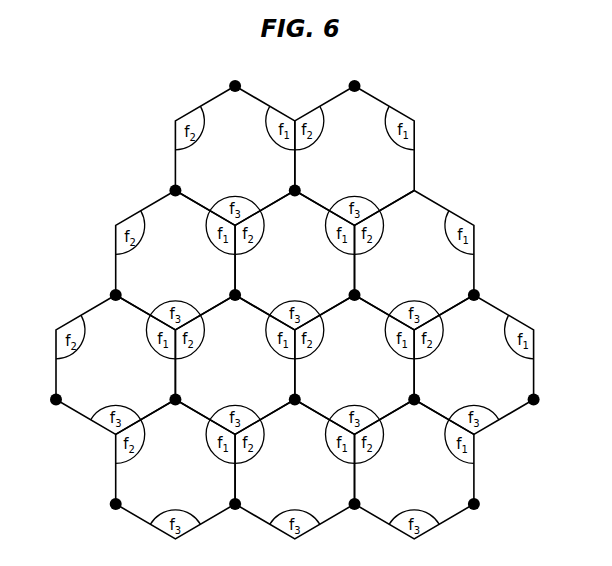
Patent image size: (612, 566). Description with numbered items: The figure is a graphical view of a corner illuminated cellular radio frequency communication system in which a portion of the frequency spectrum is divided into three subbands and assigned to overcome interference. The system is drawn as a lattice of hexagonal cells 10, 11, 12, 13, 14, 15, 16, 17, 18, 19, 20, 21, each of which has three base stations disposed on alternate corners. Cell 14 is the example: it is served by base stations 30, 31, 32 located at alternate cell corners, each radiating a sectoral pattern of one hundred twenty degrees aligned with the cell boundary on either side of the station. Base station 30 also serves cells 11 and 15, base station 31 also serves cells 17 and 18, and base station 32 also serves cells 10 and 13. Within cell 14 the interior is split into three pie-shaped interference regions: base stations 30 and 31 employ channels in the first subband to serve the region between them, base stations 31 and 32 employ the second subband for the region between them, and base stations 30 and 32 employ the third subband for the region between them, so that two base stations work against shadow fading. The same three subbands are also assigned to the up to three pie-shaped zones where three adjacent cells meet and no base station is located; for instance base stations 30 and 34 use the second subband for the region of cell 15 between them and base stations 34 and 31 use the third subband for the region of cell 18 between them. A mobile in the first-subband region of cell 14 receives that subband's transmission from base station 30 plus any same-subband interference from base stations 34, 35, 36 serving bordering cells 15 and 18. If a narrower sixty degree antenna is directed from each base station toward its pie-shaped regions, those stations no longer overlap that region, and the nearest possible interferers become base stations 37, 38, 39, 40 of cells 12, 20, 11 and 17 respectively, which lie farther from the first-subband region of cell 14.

The hexagonal cell 10 is at (185, 498).
The hexagonal cell 11 is at (304, 498).
The hexagonal cell 12 is at (405, 498).
The hexagonal cell 13 is at (125, 394).
The hexagonal cell 14 is at (226, 394).
The hexagonal cell 15 is at (345, 394).
The hexagonal cell 16 is at (483, 394).
The hexagonal cell 17 is at (185, 289).
The hexagonal cell 18 is at (304, 289).
The hexagonal cell 19 is at (405, 289).
The hexagonal cell 20 is at (226, 185).
The hexagonal cell 21 is at (345, 185).
The base station 30 is at (290, 396).
The base station 31 is at (235, 301).
The base station 32 is at (180, 396).
The base station 34 is at (354, 301).
The base station 35 is at (409, 397).
The base station 36 is at (295, 196).
The base station 37 is at (468, 505).
The base station 38 is at (235, 92).
The base station 39 is at (349, 505).
The base station 40 is at (175, 196).